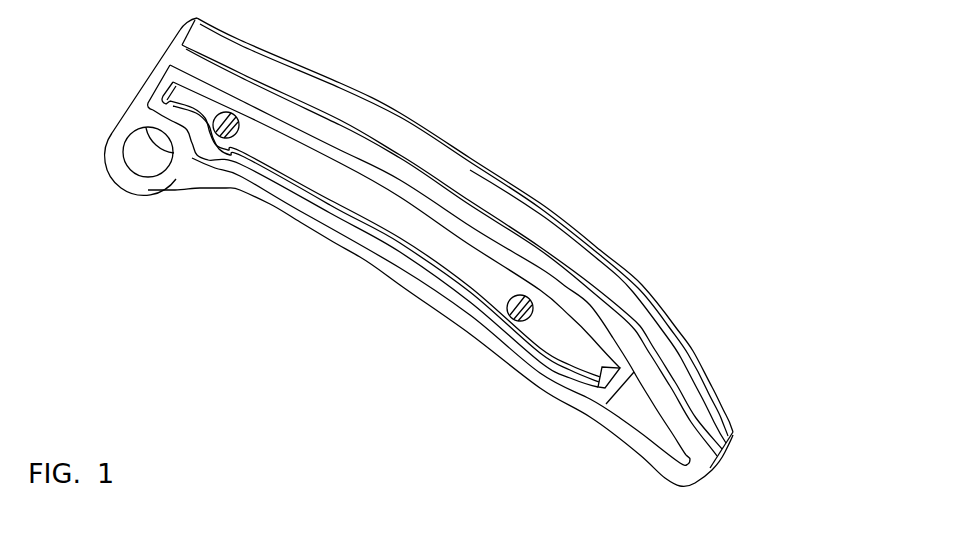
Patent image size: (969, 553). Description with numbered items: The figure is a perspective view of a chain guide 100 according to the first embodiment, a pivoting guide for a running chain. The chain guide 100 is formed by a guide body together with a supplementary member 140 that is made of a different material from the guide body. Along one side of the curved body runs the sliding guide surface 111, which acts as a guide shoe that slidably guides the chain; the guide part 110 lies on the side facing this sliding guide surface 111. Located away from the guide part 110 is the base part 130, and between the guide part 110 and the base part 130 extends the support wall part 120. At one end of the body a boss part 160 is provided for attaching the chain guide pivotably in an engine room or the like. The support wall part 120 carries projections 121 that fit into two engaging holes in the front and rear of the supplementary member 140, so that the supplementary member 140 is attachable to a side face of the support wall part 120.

The chain guide 100 is at (600, 89).
The guide part 110 is at (522, 247).
The sliding guide surface 111 is at (457, 173).
The support wall part 120 is at (640, 400).
The projections 121 is at (238, 118).
The base part 130 is at (357, 252).
The supplementary member 140 is at (327, 177).
The boss part 160 is at (153, 190).